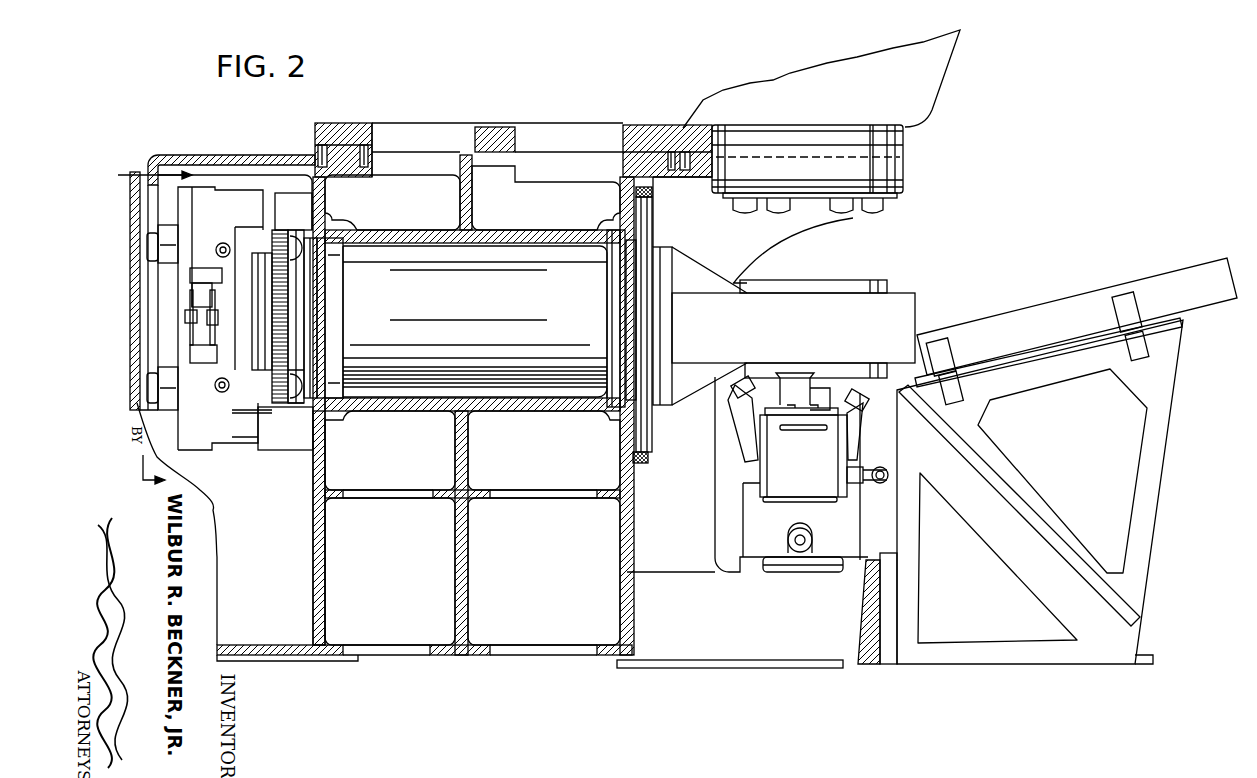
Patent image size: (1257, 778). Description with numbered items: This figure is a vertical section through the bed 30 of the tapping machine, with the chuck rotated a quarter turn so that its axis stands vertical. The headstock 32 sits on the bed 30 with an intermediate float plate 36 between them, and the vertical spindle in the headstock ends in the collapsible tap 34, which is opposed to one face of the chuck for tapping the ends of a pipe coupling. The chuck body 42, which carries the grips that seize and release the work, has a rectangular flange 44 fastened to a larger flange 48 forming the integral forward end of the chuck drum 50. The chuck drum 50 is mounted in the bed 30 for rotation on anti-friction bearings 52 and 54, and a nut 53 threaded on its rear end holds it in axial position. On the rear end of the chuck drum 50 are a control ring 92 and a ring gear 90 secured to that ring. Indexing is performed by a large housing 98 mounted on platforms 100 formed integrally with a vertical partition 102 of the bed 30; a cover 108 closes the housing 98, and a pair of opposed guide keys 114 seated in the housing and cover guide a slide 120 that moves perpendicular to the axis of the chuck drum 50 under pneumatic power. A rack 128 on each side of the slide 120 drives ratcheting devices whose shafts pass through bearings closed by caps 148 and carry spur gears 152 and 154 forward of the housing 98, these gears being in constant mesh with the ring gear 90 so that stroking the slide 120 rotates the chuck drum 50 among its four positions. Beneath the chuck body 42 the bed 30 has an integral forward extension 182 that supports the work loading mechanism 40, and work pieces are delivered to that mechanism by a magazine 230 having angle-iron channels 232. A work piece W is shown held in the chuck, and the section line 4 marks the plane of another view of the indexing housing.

The bed 30 is at (567, 411).
The headstock 32 is at (807, 82).
The collapsible tap 34 is at (905, 173).
The intermediate float plate 36 is at (650, 127).
The loading mechanism 40 is at (878, 442).
The chuck body 42 is at (832, 334).
The rectangular flange 44 is at (667, 308).
The flange 48 is at (643, 208).
The chuck drum 50 is at (460, 314).
The anti-friction bearing 52 is at (617, 308).
The nut 53 is at (305, 292).
The anti-friction bearing 54 is at (332, 270).
The ring gear 90 is at (297, 243).
The control ring 92 is at (264, 257).
The housing 98 is at (205, 190).
The platform 100 is at (292, 193).
The vertical partition 102 is at (312, 545).
The cover 108 is at (180, 287).
The guide key 114 is at (185, 315).
The slide 120 is at (202, 333).
The rack 128 is at (192, 352).
The cap 148 is at (152, 252).
The spur gear 152 is at (278, 233).
The spur gear 154 is at (275, 403).
The forward extension 182 is at (793, 650).
The magazine 230 is at (1024, 411).
The angle-iron channel 232 is at (1038, 319).
The workpiece W is at (812, 284).
The section line 4 is at (145, 327).